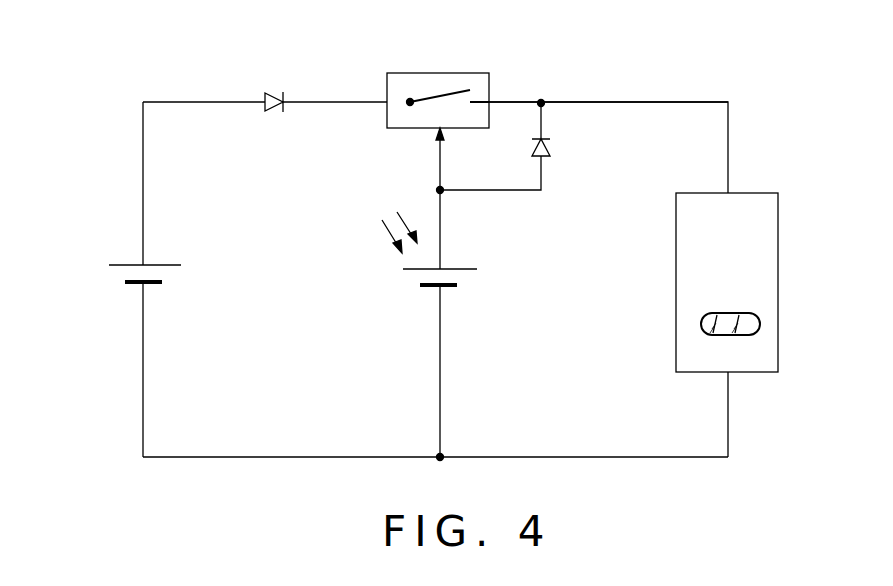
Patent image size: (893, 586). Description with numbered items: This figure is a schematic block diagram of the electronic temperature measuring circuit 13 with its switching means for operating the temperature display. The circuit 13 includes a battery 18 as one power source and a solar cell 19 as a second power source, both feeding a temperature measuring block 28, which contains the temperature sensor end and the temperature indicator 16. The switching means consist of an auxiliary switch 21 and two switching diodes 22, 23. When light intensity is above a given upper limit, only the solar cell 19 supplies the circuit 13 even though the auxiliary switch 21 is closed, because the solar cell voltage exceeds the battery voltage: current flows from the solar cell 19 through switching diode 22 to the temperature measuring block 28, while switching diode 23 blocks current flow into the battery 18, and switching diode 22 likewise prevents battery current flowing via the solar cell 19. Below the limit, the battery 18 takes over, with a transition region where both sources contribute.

The temperature measuring circuit 13 is at (636, 91).
The temperature indicator 16 is at (767, 331).
The battery 18 is at (122, 263).
The solar cell 19 is at (463, 269).
The auxiliary switch 21 is at (423, 73).
The switching diode 22 is at (552, 147).
The switching diode 23 is at (268, 94).
The temperature measuring block 28 is at (778, 225).